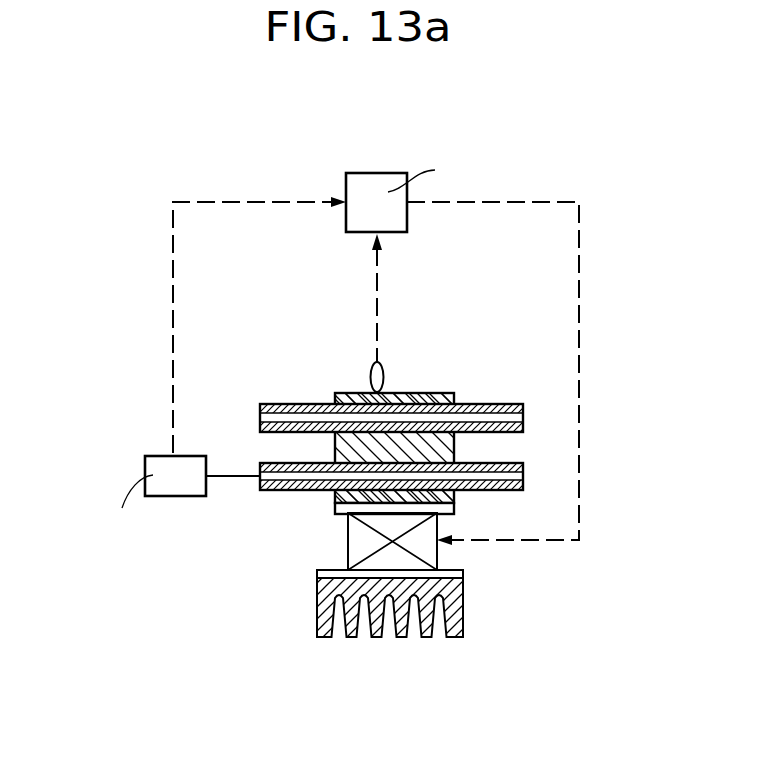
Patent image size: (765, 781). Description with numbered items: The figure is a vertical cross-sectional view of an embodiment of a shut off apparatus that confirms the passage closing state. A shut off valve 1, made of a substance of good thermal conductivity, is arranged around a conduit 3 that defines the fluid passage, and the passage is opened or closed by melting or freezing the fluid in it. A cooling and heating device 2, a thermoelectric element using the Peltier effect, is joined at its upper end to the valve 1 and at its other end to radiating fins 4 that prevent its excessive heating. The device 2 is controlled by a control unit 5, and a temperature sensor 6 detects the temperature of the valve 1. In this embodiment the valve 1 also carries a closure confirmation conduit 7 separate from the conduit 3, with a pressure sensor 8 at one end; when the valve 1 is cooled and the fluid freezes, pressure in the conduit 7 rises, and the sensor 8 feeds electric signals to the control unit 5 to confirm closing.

The shut off valve 1 is at (457, 393).
The cooling and heating device 2 is at (348, 543).
The conduit 3 is at (270, 404).
The radiating fins 4 is at (320, 604).
The control unit 5 is at (400, 173).
The temperature sensor 6 is at (371, 378).
The closure confirmation conduit 7 is at (263, 488).
The pressure sensor 8 is at (157, 456).